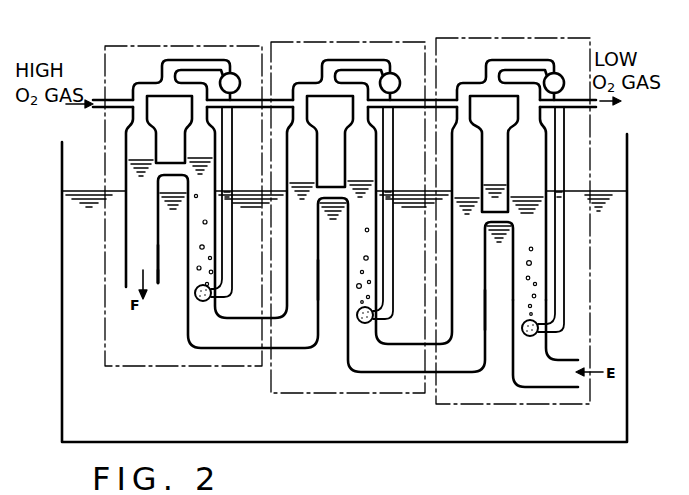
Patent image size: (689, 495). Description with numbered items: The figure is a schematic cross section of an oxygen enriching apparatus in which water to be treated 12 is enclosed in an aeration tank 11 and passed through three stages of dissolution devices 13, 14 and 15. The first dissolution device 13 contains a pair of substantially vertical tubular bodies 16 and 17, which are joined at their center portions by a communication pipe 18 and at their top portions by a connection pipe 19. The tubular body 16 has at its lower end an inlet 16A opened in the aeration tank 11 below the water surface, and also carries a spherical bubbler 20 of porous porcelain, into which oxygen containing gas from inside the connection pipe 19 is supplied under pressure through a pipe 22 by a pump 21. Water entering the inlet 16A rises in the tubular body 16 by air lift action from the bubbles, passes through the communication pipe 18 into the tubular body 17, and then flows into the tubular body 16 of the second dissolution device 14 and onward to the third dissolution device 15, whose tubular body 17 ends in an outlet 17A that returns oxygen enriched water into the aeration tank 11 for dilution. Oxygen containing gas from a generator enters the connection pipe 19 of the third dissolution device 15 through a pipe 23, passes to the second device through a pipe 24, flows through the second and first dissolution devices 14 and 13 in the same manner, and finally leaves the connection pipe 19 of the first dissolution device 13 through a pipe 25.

The aeration tank 11 is at (617, 243).
The water to be treated 12 is at (628, 305).
The first dissolution device 13 is at (514, 37).
The second dissolution device 14 is at (358, 42).
The third dissolution device 15 is at (196, 45).
The tubular body 16 is at (191, 232).
The inlet 16A is at (566, 372).
The tubular body 17 is at (156, 262).
The outlet 17A is at (155, 273).
The communication pipe 18 is at (170, 158).
The connection pipe 19 is at (157, 84).
The spherical bubbler 20 is at (192, 303).
The pump 21 is at (237, 74).
The pipe 22 is at (233, 167).
The pipe 23 is at (115, 99).
The pipe 24 is at (278, 98).
The pipe 25 is at (587, 104).